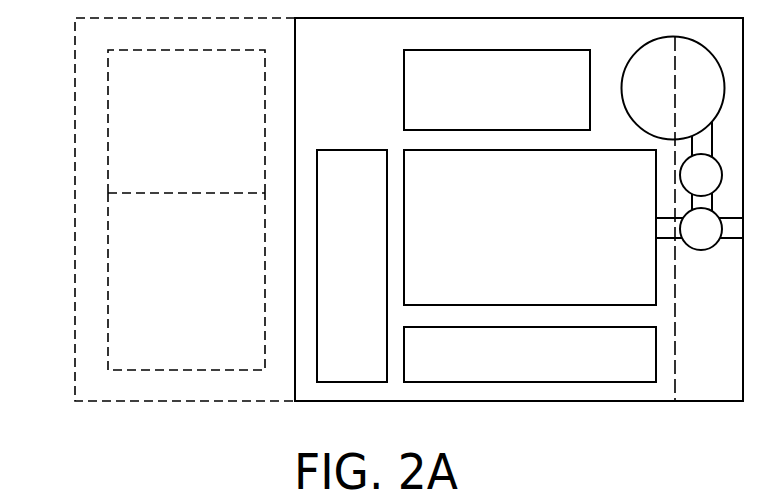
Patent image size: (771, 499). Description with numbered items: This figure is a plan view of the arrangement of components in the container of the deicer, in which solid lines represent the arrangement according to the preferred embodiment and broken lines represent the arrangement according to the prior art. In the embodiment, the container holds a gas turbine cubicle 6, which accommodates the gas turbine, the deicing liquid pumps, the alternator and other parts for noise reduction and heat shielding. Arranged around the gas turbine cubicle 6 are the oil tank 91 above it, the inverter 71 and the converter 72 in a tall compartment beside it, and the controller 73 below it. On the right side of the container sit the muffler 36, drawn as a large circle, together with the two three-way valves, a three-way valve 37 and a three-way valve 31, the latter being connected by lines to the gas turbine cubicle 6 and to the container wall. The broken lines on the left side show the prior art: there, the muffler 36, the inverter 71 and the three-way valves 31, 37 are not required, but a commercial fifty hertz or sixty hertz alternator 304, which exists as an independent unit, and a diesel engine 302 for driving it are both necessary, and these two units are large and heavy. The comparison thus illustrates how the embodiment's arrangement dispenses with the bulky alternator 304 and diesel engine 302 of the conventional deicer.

The gas turbine cubicle 6 is at (523, 237).
The three-way valve 31 is at (689, 238).
The muffler 36 is at (689, 103).
The three-way valve 37 is at (689, 188).
The inverter 71 is at (368, 255).
The converter 72 is at (368, 283).
The controller 73 is at (513, 365).
The oil tank 91 is at (484, 103).
The diesel engine 302 is at (140, 287).
The alternator 304 is at (140, 137).